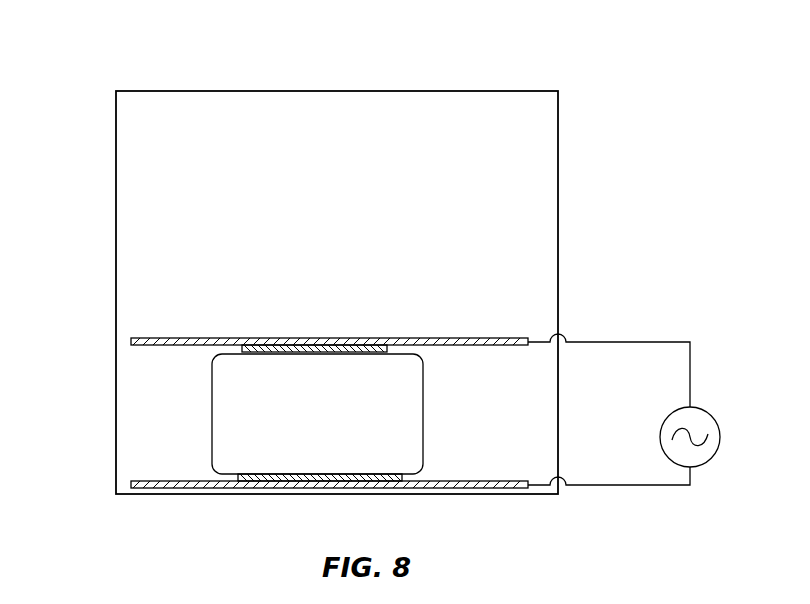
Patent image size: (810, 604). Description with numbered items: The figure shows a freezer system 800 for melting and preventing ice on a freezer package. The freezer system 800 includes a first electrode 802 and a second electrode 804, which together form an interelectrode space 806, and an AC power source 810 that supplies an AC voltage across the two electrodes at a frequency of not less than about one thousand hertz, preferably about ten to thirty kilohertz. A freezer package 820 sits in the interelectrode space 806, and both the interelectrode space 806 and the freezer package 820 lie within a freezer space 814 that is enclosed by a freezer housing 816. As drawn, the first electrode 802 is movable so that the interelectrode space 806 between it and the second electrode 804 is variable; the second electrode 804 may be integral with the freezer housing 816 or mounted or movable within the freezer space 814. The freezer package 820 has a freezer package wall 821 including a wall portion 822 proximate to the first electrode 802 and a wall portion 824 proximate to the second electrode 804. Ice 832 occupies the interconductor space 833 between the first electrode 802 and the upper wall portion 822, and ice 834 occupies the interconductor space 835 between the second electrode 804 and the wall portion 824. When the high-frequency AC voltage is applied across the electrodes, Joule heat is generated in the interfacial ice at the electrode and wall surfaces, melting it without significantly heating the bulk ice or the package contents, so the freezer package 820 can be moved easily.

The freezer system 800 is at (110, 58).
The first electrode 802 is at (389, 338).
The second electrode 804 is at (407, 489).
The interelectrode space 806 is at (490, 415).
The AC power source 810 is at (713, 416).
The freezer space 814 is at (337, 214).
The freezer housing 816 is at (305, 292).
The freezer package 820 is at (317, 414).
The freezer package wall 821 is at (212, 380).
The wall portion 822 is at (272, 352).
The wall portion 824 is at (346, 473).
The ice 832 is at (318, 352).
The interconductor space 833 is at (236, 347).
The ice 834 is at (286, 474).
The interconductor space 835 is at (219, 478).